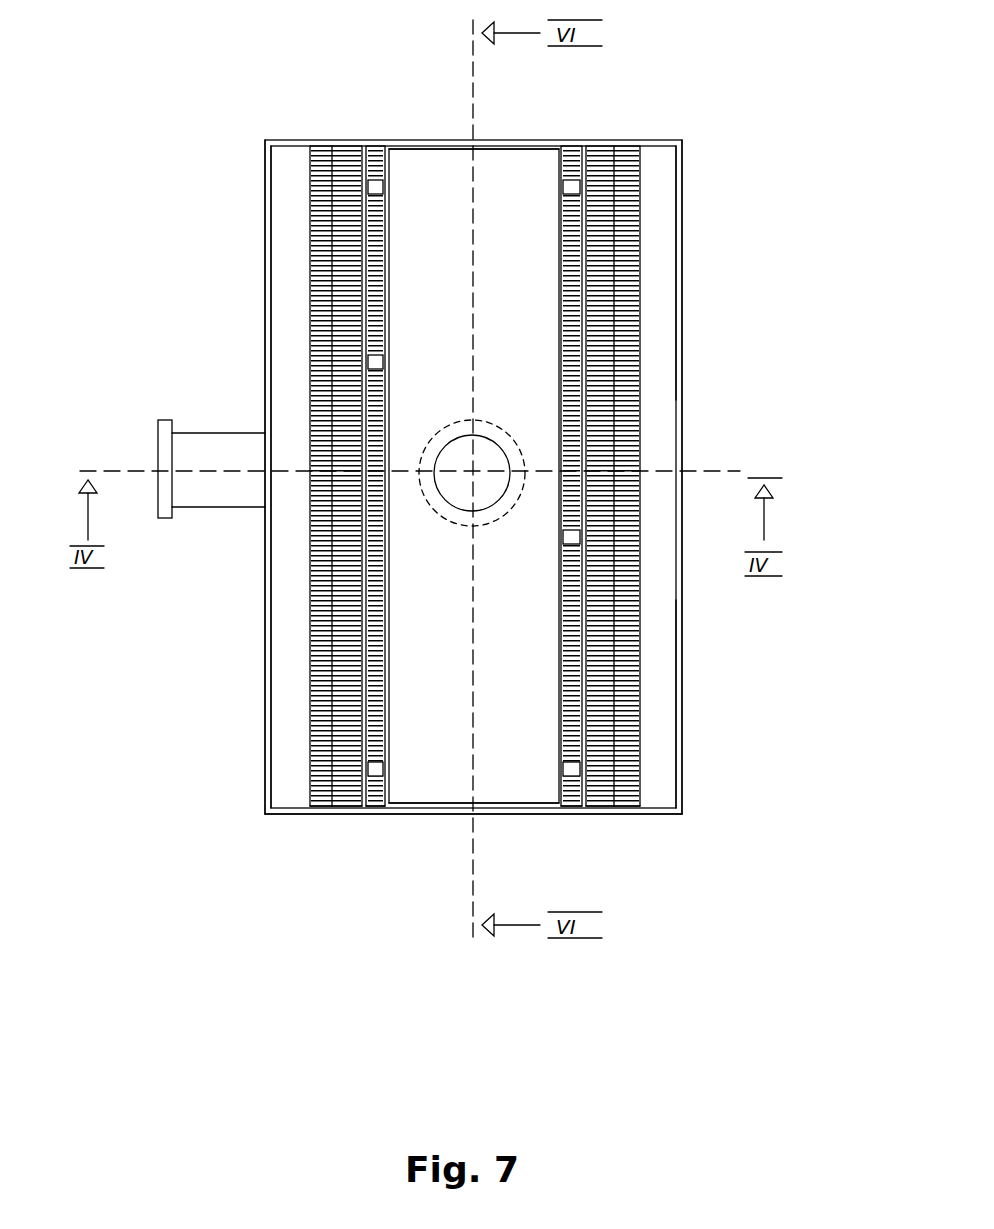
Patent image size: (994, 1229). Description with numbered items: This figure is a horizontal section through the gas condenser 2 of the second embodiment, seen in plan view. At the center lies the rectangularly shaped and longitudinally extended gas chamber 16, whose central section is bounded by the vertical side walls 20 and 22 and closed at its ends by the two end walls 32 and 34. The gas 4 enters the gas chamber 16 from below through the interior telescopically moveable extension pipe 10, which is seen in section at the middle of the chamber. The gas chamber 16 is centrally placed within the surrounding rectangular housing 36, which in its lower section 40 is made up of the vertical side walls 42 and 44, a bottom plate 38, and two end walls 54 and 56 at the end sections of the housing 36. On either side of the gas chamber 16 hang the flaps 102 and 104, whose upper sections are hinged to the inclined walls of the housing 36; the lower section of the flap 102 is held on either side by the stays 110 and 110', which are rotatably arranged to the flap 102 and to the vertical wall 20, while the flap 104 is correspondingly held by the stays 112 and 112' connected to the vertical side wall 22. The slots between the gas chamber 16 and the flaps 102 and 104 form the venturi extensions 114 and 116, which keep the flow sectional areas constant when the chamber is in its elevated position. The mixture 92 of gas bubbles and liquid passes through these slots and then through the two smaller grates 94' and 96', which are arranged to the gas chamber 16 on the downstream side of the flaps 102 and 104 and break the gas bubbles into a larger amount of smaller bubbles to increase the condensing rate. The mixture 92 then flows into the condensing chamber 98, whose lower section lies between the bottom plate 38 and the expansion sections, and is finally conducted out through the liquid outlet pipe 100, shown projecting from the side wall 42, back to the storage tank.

The gas condenser 2 is at (228, 793).
The gas 4 is at (466, 470).
The extension pipe 10 is at (495, 462).
The gas chamber 16 is at (440, 165).
The vertical side wall 20 is at (386, 275).
The vertical side wall 22 is at (561, 262).
The end wall 32 is at (485, 803).
The end wall 34 is at (518, 150).
The housing 36 is at (294, 136).
The bottom plate 38 is at (437, 805).
The lower section 40 is at (690, 203).
The vertical side wall 42 is at (265, 672).
The vertical side wall 44 is at (683, 690).
The end wall 54 is at (655, 810).
The end wall 56 is at (661, 140).
The mixture 92 is at (385, 360).
The grate 94' is at (299, 847).
The grate 96' is at (613, 847).
The condensing chamber 98 is at (297, 258).
The liquid outlet pipe 100 is at (214, 440).
The flap 102 is at (362, 140).
The flap 104 is at (583, 175).
The stay 110 is at (415, 754).
The stay 110' is at (409, 196).
The stay 112 is at (533, 753).
The stay 112' is at (539, 207).
The venturi extension 114 is at (372, 808).
The venturi extension 116 is at (573, 792).